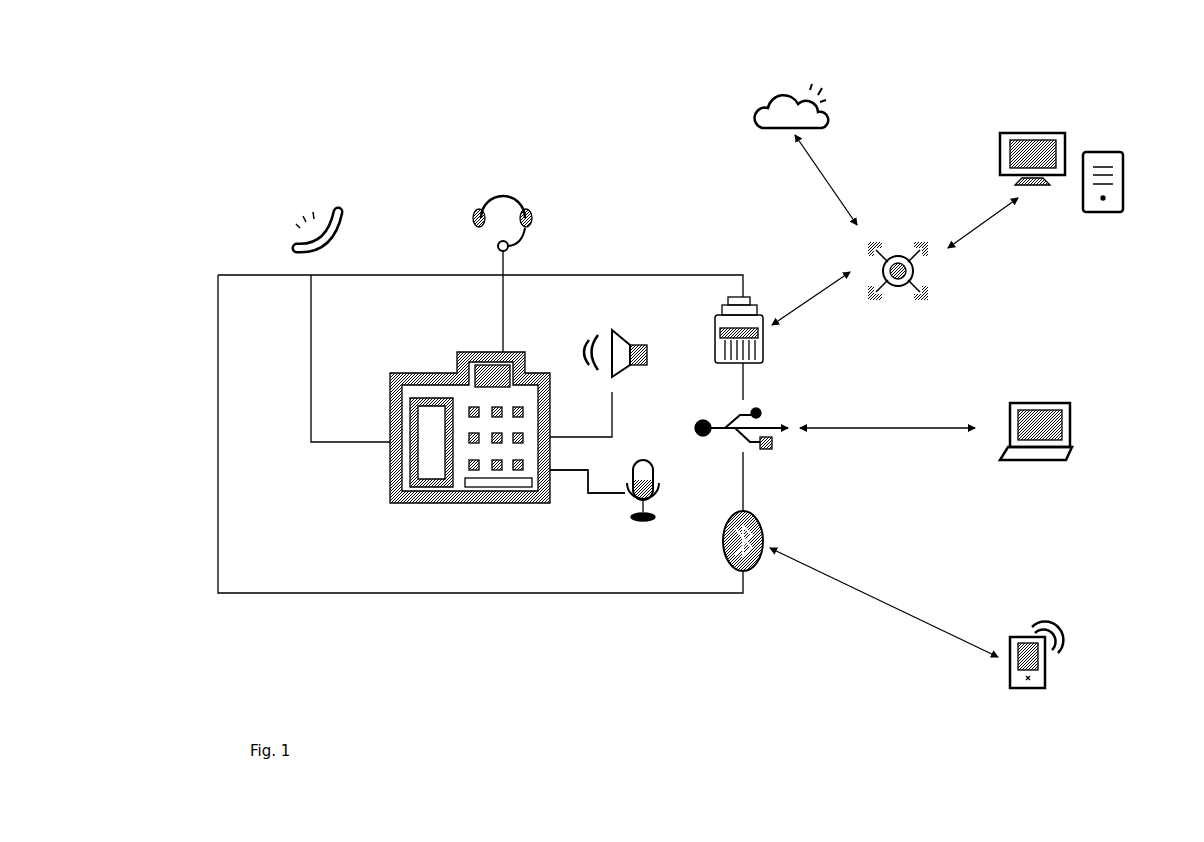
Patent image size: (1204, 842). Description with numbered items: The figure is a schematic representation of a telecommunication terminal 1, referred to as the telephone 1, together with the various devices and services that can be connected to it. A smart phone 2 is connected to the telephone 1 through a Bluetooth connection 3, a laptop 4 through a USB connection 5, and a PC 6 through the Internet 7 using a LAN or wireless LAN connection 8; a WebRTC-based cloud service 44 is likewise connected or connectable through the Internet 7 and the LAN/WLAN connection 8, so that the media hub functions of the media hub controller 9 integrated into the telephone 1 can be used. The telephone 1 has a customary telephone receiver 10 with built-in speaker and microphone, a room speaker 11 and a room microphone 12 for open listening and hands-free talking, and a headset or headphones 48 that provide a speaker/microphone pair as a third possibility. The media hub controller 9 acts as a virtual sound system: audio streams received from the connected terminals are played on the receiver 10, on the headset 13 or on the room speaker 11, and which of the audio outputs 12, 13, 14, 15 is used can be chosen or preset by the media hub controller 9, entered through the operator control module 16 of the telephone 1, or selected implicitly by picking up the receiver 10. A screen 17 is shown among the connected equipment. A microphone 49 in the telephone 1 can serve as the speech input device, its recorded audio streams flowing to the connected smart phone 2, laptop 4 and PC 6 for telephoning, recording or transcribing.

The telecommunication terminal 1 is at (415, 272).
The smart phone 2 is at (1030, 620).
The Bluetooth connection 3 is at (858, 585).
The laptop 4 is at (1045, 403).
The USB connection 5 is at (845, 420).
The PC 6 is at (1127, 175).
The Internet 7 is at (905, 245).
The LAN/WLAN connection 8 is at (810, 296).
The media hub controller 9 is at (498, 487).
The telephone receiver 10 is at (338, 212).
The speaker 11 is at (652, 355).
The audio interface 12 is at (553, 432).
The audio interface 13 is at (556, 468).
The audio interface 14 is at (508, 352).
The audio interface 15 is at (392, 444).
The operator control module 16 is at (522, 398).
The screen 17 is at (1038, 135).
The WebRTC service 44 is at (763, 105).
The headphones/headset 48 is at (515, 185).
The microphone 49 is at (636, 532).